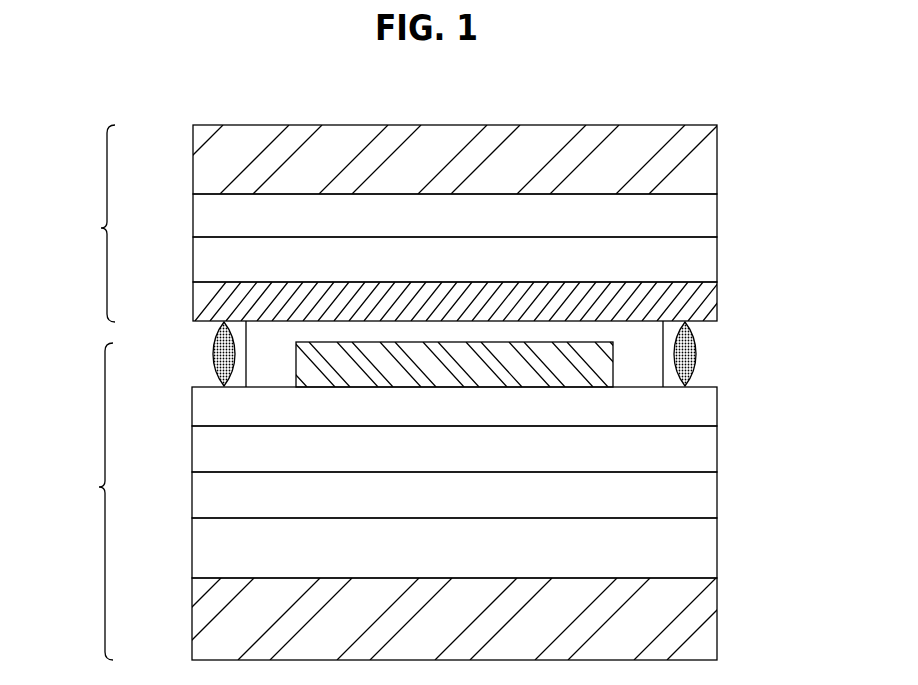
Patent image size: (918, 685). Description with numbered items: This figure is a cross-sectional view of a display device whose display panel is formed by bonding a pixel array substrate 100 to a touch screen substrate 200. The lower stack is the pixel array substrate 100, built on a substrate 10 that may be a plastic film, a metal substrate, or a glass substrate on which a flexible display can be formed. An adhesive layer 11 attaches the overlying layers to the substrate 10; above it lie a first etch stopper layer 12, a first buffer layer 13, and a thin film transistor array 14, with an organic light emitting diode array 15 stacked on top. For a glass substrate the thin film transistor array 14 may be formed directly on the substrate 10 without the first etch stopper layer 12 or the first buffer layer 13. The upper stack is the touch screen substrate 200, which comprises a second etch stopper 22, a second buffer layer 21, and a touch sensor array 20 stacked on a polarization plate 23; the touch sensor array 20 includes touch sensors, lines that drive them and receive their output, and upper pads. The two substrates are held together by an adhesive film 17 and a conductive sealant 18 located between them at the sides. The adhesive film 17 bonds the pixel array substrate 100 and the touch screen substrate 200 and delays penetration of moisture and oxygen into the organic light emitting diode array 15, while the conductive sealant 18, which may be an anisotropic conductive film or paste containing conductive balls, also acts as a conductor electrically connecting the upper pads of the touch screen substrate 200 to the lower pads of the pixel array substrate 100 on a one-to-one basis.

The pixel array substrate 100 is at (452, 501).
The touch screen substrate 200 is at (422, 223).
The substrate 10 is at (710, 619).
The adhesive layer 11 is at (710, 551).
The first etch stopper layer 12 is at (710, 493).
The first buffer layer 13 is at (710, 448).
The thin film transistor array 14 is at (710, 406).
The organic light emitting diode array 15 is at (330, 348).
The adhesive film 17 is at (642, 353).
The conductive sealant 18 is at (213, 353).
The touch sensor array 20 is at (711, 304).
The second buffer layer 21 is at (711, 259).
The second etch stopper 22 is at (711, 210).
The polarization plate 23 is at (711, 156).